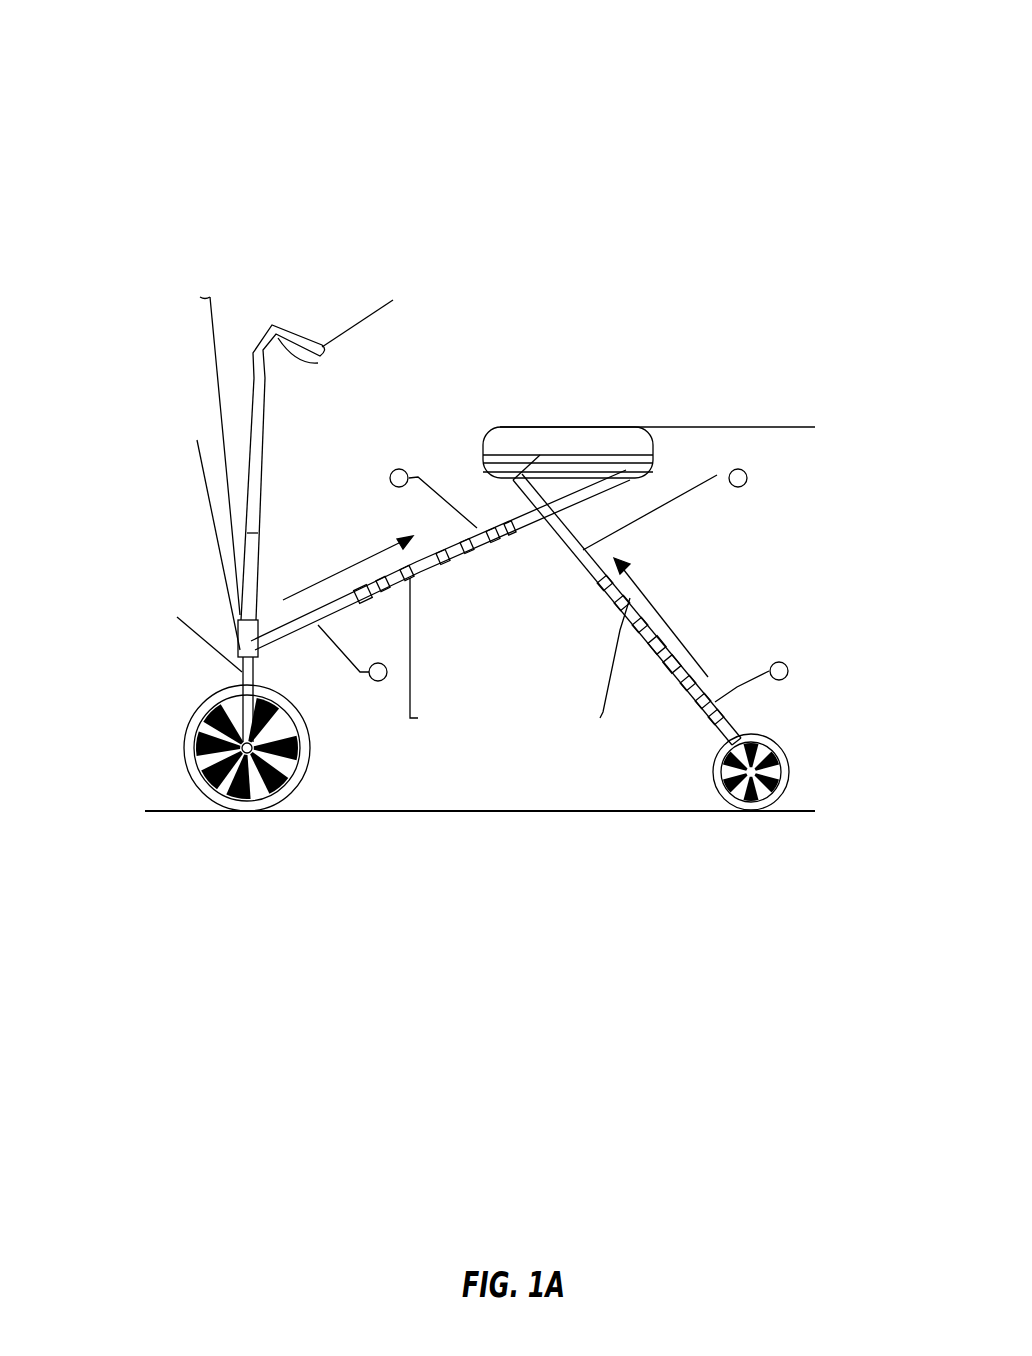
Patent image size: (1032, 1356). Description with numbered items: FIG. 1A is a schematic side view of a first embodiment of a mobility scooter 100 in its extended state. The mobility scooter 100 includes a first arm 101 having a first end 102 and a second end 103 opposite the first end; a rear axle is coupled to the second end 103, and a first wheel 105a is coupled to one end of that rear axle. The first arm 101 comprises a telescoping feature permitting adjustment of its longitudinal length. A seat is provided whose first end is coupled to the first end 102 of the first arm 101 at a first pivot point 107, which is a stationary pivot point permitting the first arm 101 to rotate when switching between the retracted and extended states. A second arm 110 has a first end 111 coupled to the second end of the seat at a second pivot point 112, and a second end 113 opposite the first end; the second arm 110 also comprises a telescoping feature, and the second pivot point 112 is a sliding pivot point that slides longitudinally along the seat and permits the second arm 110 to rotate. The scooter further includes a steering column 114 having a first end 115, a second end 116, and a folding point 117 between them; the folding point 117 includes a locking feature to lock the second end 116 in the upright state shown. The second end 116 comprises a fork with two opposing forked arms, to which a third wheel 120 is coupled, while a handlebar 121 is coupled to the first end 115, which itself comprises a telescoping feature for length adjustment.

The mobility scooter 100 is at (803, 150).
The first arm 101 is at (658, 637).
The first end of the first arm 102 is at (507, 455).
The second end of the first arm 103 is at (710, 737).
The first wheel 105a is at (773, 770).
The first pivot point 107 is at (500, 427).
The second arm 110 is at (441, 550).
The first end of the second arm 111 is at (582, 493).
The second pivot point 112 is at (680, 445).
The second end of the second arm 113 is at (250, 640).
The steering column 114 is at (252, 563).
The first end of the steering column 115 is at (253, 393).
The second end of the steering column 116 is at (287, 770).
The folding point 117 is at (260, 563).
The third wheel 120 is at (222, 780).
The handlebar 121 is at (297, 343).